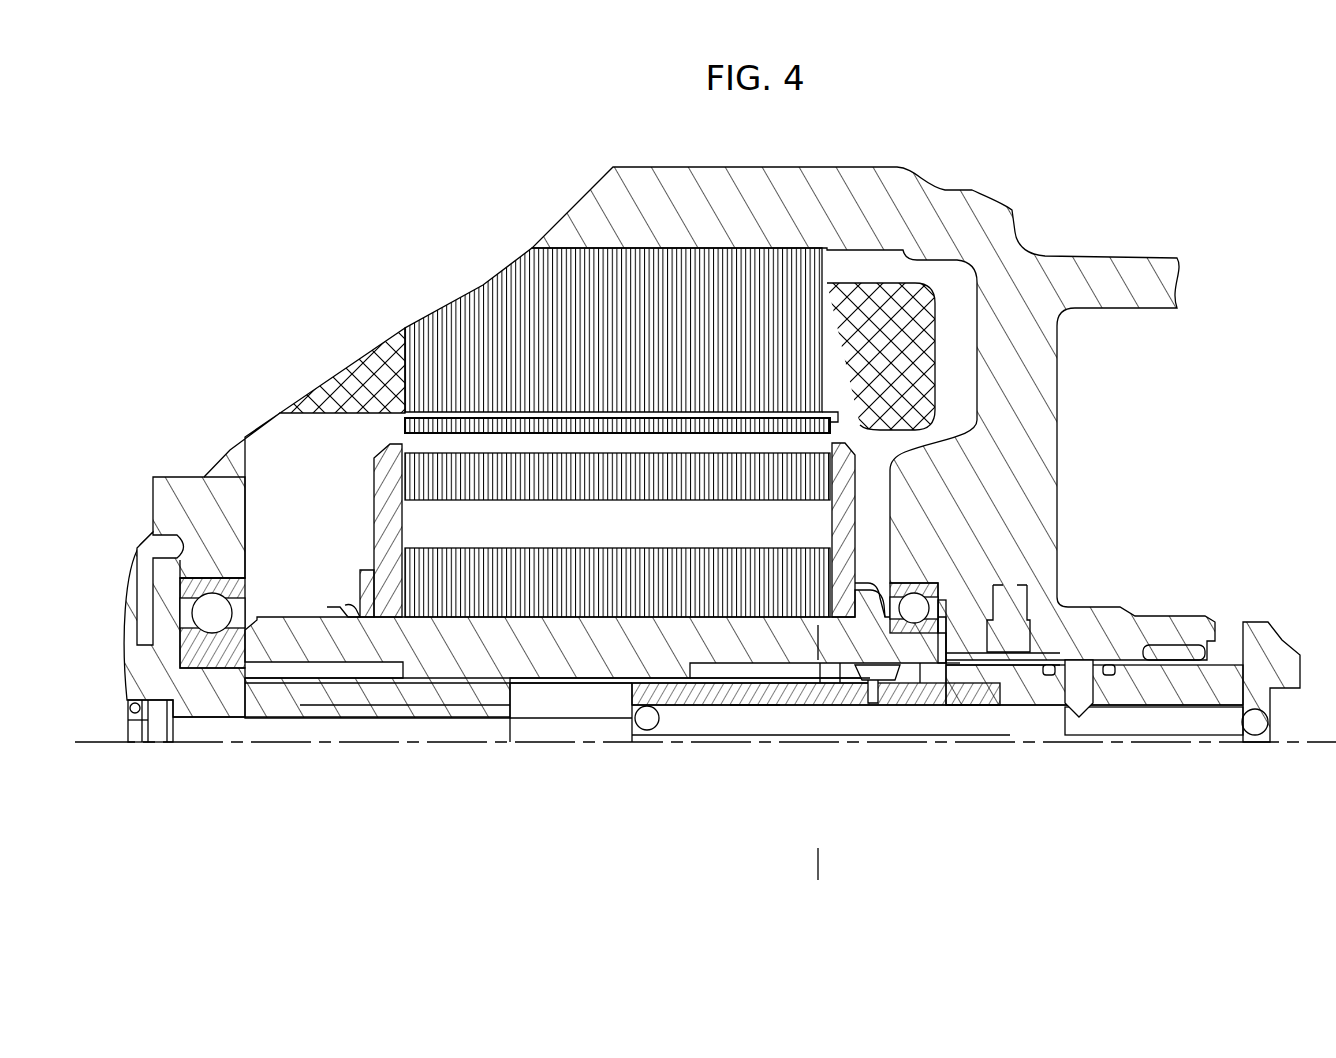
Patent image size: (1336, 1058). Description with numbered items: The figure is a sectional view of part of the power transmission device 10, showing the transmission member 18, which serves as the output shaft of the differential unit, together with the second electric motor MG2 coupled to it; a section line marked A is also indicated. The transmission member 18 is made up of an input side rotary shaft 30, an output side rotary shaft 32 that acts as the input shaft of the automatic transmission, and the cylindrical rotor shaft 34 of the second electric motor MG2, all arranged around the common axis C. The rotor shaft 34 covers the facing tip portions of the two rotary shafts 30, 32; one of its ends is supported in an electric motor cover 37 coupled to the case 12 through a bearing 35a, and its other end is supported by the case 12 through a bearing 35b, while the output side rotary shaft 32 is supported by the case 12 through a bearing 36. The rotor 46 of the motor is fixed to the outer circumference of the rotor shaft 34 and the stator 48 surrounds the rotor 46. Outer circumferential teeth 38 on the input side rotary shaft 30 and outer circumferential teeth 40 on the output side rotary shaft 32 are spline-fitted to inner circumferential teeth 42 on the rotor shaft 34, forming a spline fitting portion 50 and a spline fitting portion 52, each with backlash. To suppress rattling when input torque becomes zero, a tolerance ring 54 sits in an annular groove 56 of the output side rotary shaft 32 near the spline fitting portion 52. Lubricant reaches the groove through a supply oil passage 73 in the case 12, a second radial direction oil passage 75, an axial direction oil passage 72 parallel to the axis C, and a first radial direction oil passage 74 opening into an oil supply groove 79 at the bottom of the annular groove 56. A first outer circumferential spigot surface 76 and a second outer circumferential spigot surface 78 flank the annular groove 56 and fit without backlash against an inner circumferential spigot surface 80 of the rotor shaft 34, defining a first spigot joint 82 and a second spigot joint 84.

The power transmission device 10 is at (276, 198).
The case 12 is at (1043, 272).
The transmission member 18 is at (578, 834).
The second electric motor MG2 is at (396, 300).
The input side rotary shaft 30 is at (350, 750).
The output side rotary shaft 32 is at (1160, 752).
The rotor shaft 34 is at (531, 664).
The bearing 35a is at (224, 601).
The bearing 35b is at (918, 606).
The bearing 36 is at (1175, 650).
The electric motor cover 37 is at (192, 516).
The outer circumferential teeth 38 is at (506, 692).
The outer circumferential teeth 40 is at (661, 692).
The inner circumferential teeth 42 is at (586, 690).
The rotor 46 is at (436, 479).
The stator 48 is at (520, 300).
The spline fitting portion 50 is at (451, 690).
The spline fitting portion 52 is at (696, 686).
The tolerance ring 54 is at (866, 688).
The annular groove 56 is at (862, 656).
The axial direction oil passage 72 is at (742, 726).
The supply oil passage 73 is at (1010, 600).
The first radial direction oil passage 74 is at (878, 704).
The second radial direction oil passage 75 is at (1079, 702).
The first outer circumferential spigot surface 76 is at (838, 682).
The second outer circumferential spigot surface 78 is at (1032, 649).
The oil supply groove 79 is at (940, 684).
The inner circumferential spigot surface 80 is at (941, 692).
The first spigot joint 82 is at (804, 676).
The second spigot joint 84 is at (958, 682).
The section line A is at (814, 640).
The axis C is at (232, 756).